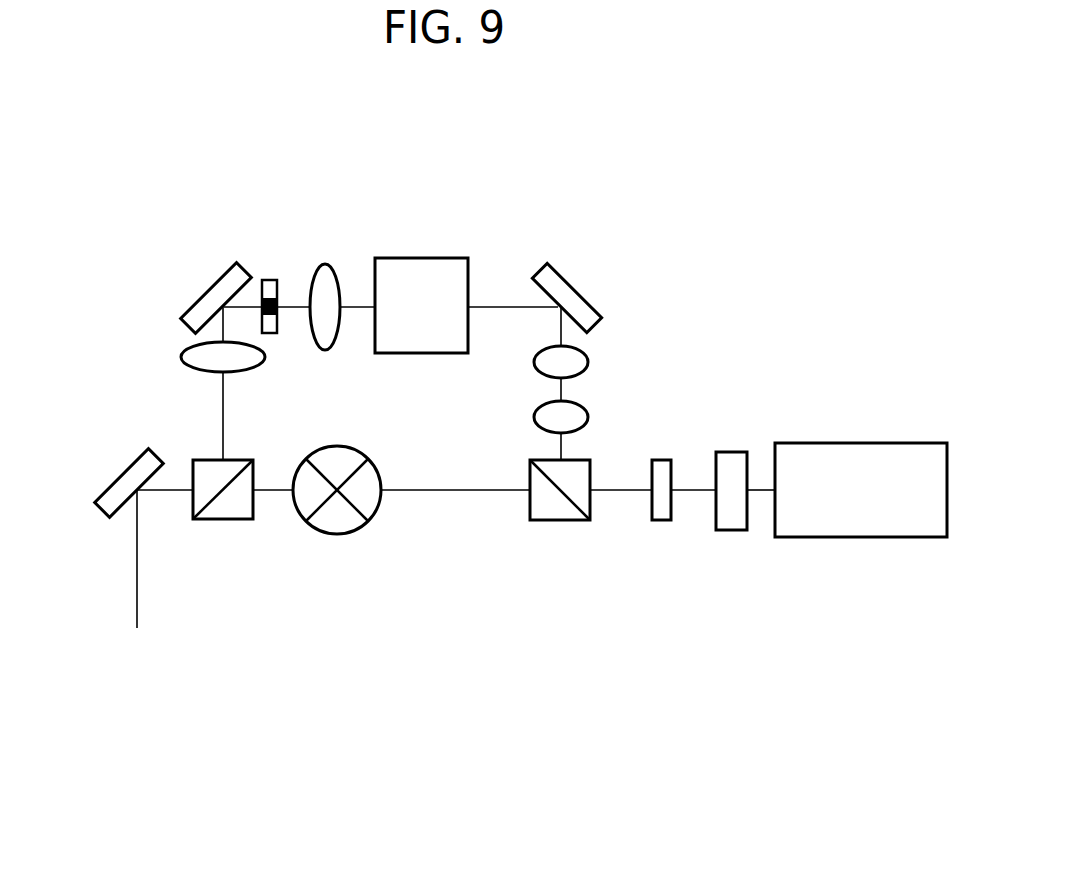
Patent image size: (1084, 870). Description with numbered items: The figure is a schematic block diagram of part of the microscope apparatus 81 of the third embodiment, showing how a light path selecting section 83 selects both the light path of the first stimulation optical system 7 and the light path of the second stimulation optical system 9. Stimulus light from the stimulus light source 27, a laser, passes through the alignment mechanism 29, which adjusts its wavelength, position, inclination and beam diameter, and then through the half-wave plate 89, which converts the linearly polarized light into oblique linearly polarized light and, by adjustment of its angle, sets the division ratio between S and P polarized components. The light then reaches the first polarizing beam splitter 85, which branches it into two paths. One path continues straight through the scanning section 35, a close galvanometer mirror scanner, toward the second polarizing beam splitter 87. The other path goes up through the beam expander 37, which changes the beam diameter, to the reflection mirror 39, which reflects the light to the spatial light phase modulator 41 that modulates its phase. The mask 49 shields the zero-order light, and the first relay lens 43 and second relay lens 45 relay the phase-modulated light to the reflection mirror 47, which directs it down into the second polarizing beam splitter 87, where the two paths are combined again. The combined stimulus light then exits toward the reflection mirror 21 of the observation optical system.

The first stimulation optical system 7 is at (433, 450).
The second stimulation optical system 9 is at (512, 203).
The reflection mirror 21 is at (108, 473).
The stimulus light source 27 is at (852, 443).
The alignment mechanism 29 is at (732, 452).
The scanning section 35 is at (380, 512).
The beam expander 37 is at (592, 347).
The reflection mirror 39 is at (578, 292).
The spatial light phase modulator 41 is at (410, 258).
The first relay lens 43 is at (323, 264).
The second relay lens 45 is at (181, 356).
The reflection mirror 47 is at (210, 282).
The mask 49 is at (267, 280).
The microscope apparatus 81 is at (125, 157).
The light path selecting section 83 is at (198, 608).
The first polarizing beam splitter 85 is at (562, 522).
The second polarizing beam splitter 87 is at (220, 522).
The λ/2 plate 89 is at (660, 522).